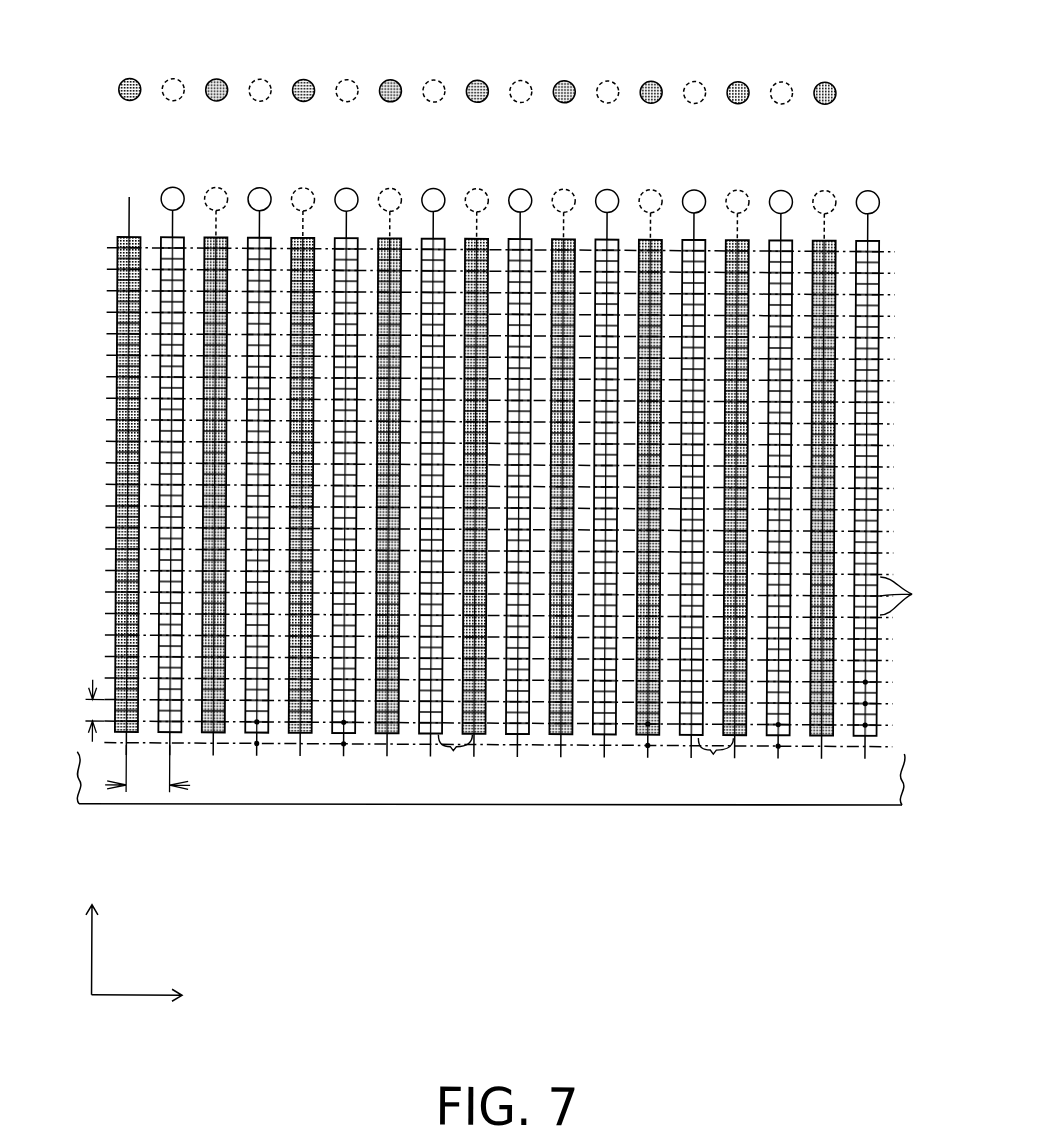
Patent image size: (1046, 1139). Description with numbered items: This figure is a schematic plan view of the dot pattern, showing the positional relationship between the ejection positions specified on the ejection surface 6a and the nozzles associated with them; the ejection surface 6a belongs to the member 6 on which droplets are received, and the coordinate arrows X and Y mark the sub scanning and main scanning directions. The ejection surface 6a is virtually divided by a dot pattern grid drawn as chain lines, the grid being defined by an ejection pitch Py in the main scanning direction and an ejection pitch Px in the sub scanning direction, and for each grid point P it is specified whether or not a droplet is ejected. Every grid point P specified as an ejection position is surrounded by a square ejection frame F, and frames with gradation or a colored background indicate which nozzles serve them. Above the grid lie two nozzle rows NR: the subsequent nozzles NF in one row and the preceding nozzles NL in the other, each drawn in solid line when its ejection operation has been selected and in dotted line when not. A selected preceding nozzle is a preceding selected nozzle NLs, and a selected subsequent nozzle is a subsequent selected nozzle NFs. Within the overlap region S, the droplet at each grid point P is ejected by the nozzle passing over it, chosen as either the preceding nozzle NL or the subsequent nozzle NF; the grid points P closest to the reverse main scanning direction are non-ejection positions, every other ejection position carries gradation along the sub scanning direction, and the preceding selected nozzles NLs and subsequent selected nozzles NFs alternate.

The nozzle row NR is at (755, 50).
The subsequent nozzle NF is at (263, 80).
The subsequent selected nozzle NFs is at (649, 86).
The preceding nozzle NL is at (262, 190).
The preceding selected nozzle NLs is at (606, 197).
The grid point P is at (260, 722).
The ejection frame F is at (684, 680).
The ejection pitch in the sub scanning direction Px is at (147, 768).
The ejection pitch in the main scanning direction Py is at (81, 711).
The overlap region S is at (429, 819).
The medium support / platen 6 is at (491, 802).
The ejection surface 6a is at (618, 797).
The X direction X is at (147, 995).
The Y direction Y is at (91, 933).